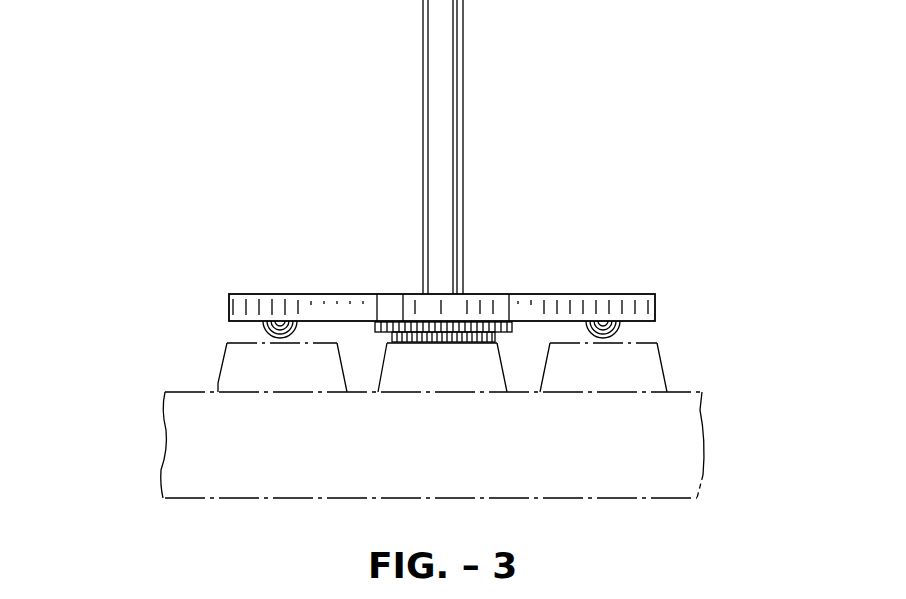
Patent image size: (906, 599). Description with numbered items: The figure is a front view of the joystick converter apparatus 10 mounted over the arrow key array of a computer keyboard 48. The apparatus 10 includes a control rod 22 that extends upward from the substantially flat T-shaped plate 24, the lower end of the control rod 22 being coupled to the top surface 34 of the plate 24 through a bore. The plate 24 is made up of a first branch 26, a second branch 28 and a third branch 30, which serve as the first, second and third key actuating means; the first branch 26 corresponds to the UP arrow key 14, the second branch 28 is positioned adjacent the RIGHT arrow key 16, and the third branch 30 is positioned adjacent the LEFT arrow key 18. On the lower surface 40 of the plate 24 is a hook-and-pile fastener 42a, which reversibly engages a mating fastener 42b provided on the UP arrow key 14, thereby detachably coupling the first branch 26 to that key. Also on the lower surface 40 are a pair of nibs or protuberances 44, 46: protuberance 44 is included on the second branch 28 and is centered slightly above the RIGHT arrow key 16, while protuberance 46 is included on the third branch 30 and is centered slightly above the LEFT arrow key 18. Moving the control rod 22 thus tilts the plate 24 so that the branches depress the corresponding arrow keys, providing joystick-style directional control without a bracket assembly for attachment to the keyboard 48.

The joystick converter apparatus 10 is at (168, 98).
The control rod 22 is at (455, 68).
The top surface 34 is at (260, 276).
The second branch 28 is at (250, 298).
The first branch 26 is at (380, 293).
The fastener 42a is at (402, 293).
The fastener 42b is at (478, 318).
The third branch 30 is at (625, 293).
The plate 24 is at (605, 262).
The protuberance 44 is at (278, 328).
The protuberance 46 is at (617, 330).
The RIGHT arrow key 16 is at (243, 375).
The UP arrow key 14 is at (460, 385).
The LEFT arrow key 18 is at (610, 385).
The lower surface 40 is at (525, 348).
The computer keyboard 48 is at (672, 482).